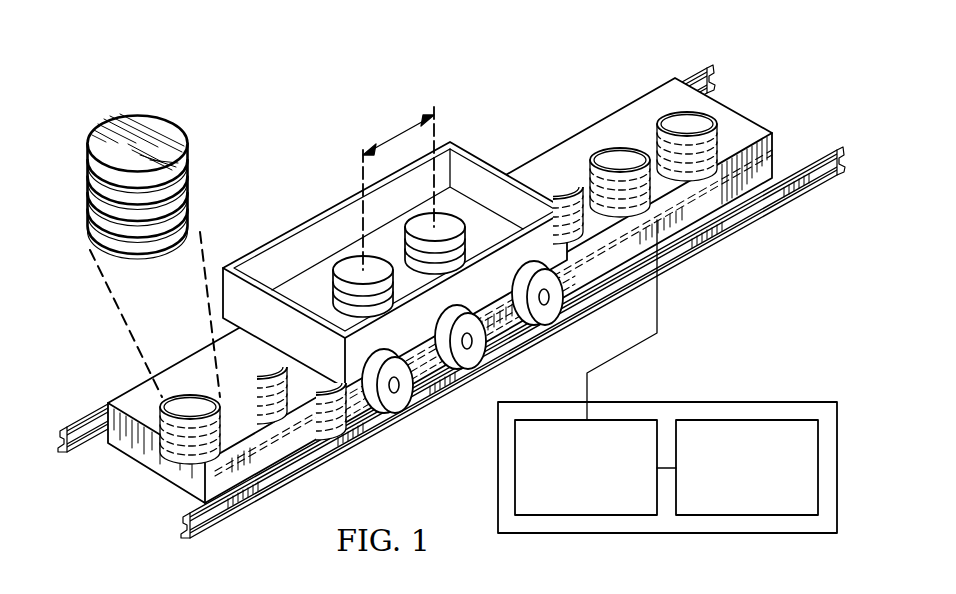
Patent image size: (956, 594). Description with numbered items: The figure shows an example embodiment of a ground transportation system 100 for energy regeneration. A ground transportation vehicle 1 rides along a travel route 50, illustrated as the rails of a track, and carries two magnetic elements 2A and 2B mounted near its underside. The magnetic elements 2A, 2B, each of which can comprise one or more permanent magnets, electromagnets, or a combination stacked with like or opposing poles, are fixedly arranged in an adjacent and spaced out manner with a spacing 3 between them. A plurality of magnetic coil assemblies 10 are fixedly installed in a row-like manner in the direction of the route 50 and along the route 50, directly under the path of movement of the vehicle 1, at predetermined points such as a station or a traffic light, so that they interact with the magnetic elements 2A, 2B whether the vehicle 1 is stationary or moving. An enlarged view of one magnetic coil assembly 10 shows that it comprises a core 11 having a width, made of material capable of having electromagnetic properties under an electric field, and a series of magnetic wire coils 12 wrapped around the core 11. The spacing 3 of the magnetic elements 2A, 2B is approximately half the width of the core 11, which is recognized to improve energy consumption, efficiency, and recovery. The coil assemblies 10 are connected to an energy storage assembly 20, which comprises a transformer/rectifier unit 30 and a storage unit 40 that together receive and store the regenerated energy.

The ground transportation system 100 is at (324, 53).
The magnetic coil assembly 10 is at (120, 112).
The core 11 is at (150, 121).
The magnetic wire coils 12 is at (189, 152).
The ground transportation vehicle 1 is at (290, 237).
The magnetic element 2A is at (348, 262).
The magnetic element 2B is at (455, 225).
The spacing 3 is at (401, 135).
The travel route 50 is at (103, 416).
The energy storage assembly 20 is at (634, 376).
The transformer/rectifier unit 30 is at (574, 479).
The storage unit 40 is at (735, 479).